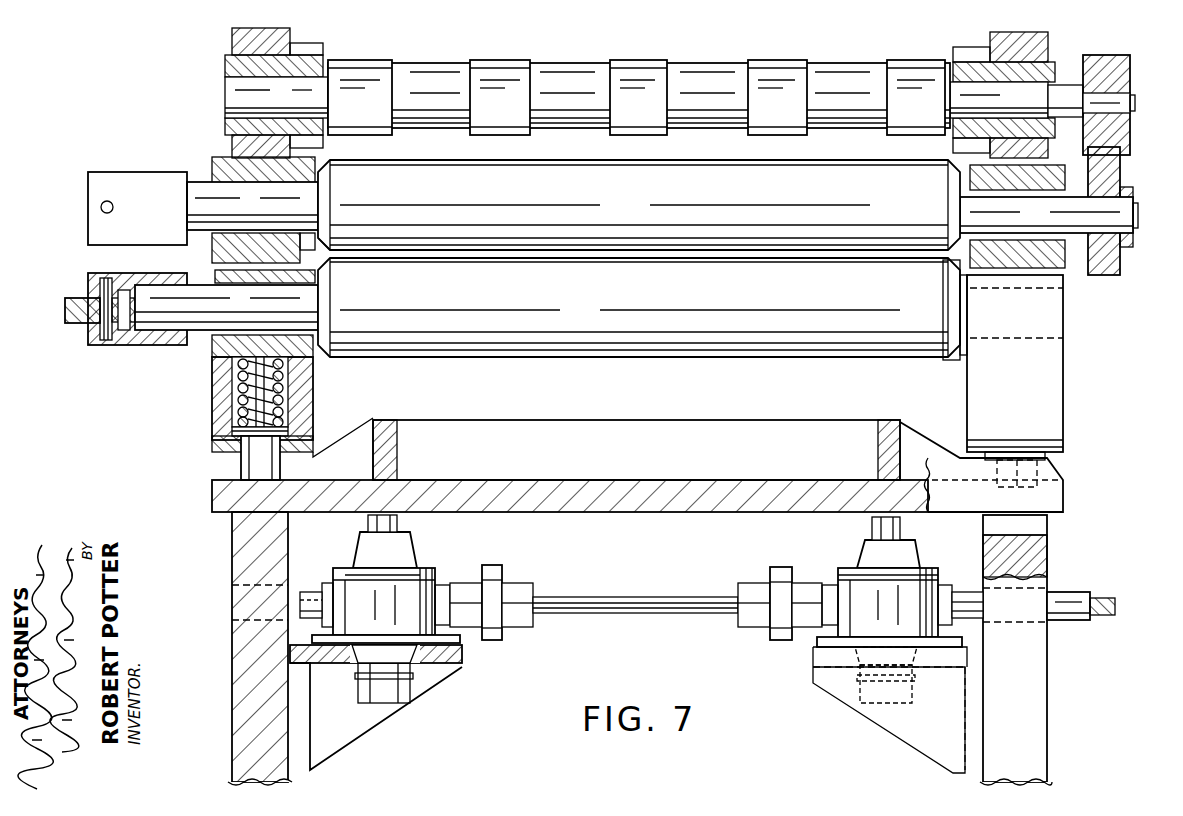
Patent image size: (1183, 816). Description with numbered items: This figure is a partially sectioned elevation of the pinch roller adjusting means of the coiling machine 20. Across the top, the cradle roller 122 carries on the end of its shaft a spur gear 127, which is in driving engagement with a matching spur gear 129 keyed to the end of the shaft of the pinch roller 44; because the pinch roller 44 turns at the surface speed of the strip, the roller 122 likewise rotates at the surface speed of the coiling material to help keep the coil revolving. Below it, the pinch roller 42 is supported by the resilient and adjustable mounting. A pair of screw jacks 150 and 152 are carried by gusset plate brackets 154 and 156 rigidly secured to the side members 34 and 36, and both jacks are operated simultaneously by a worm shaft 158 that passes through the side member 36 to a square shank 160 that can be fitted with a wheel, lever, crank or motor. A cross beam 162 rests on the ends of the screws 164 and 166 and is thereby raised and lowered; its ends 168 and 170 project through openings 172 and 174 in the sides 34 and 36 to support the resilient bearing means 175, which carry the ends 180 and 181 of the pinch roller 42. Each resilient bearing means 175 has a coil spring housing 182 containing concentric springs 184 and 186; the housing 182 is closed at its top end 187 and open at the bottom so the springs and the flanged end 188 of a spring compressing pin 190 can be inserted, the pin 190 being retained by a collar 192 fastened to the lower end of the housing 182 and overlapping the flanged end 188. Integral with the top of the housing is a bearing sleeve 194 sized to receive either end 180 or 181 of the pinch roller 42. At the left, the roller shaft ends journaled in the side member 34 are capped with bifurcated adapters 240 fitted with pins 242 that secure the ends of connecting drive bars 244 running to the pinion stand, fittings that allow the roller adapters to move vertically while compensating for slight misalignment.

The coiling machine 20 is at (636, 602).
The side member 34 is at (238, 565).
The side member 36 is at (1047, 553).
The pinch roller 42 is at (547, 321).
The pinch roller 44 is at (718, 178).
The roller 122 is at (792, 70).
The spur gear 127 is at (1098, 58).
The spur gear 129 is at (1108, 172).
The screw jack 150 is at (400, 555).
The screw jack 152 is at (866, 552).
The gusset plate bracket 154 is at (448, 678).
The gusset plate bracket 156 is at (815, 674).
The worm shaft 158 is at (596, 598).
The square shank 160 is at (1105, 598).
The cross beam 162 is at (628, 484).
The screw 164 is at (397, 524).
The screw 166 is at (872, 528).
The end of cross beam 168 is at (218, 490).
The end of cross beam 170 is at (1055, 492).
The opening 172 is at (285, 530).
The opening 174 is at (990, 532).
The resilient bearing means 175 is at (641, 381).
The end of pinch roller 180 is at (218, 322).
The end of pinch roller 181 is at (1050, 338).
The coil spring housing 182 is at (302, 385).
The spring 184 is at (266, 400).
The spring 186 is at (236, 380).
The top end of housing 187 is at (290, 345).
The flanged end 188 is at (278, 433).
The spring compressing pin 190 is at (255, 465).
The collar 192 is at (212, 445).
The bearing sleeve 194 is at (282, 283).
The adapter 240 is at (127, 178).
The pin 242 is at (118, 290).
The connecting drive bar 244 is at (70, 320).